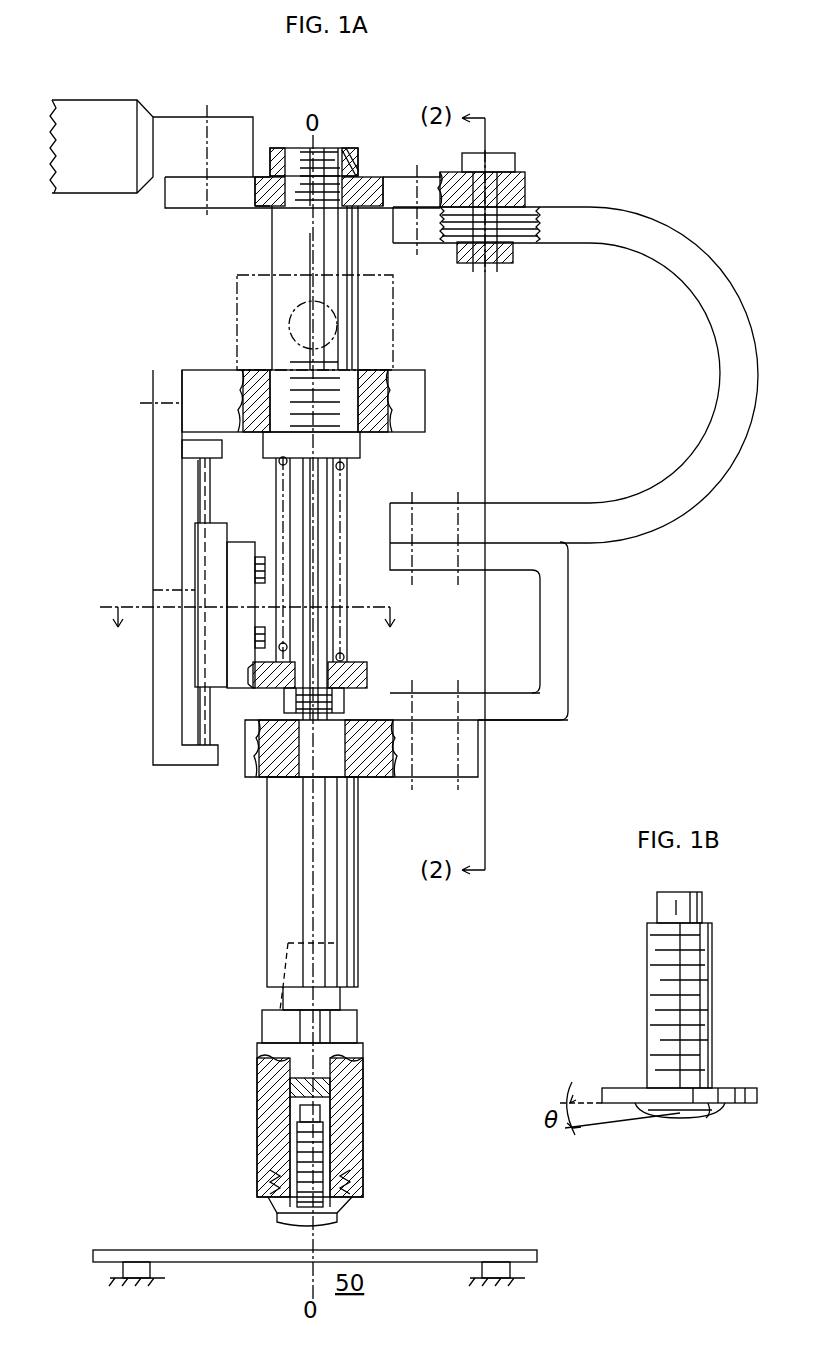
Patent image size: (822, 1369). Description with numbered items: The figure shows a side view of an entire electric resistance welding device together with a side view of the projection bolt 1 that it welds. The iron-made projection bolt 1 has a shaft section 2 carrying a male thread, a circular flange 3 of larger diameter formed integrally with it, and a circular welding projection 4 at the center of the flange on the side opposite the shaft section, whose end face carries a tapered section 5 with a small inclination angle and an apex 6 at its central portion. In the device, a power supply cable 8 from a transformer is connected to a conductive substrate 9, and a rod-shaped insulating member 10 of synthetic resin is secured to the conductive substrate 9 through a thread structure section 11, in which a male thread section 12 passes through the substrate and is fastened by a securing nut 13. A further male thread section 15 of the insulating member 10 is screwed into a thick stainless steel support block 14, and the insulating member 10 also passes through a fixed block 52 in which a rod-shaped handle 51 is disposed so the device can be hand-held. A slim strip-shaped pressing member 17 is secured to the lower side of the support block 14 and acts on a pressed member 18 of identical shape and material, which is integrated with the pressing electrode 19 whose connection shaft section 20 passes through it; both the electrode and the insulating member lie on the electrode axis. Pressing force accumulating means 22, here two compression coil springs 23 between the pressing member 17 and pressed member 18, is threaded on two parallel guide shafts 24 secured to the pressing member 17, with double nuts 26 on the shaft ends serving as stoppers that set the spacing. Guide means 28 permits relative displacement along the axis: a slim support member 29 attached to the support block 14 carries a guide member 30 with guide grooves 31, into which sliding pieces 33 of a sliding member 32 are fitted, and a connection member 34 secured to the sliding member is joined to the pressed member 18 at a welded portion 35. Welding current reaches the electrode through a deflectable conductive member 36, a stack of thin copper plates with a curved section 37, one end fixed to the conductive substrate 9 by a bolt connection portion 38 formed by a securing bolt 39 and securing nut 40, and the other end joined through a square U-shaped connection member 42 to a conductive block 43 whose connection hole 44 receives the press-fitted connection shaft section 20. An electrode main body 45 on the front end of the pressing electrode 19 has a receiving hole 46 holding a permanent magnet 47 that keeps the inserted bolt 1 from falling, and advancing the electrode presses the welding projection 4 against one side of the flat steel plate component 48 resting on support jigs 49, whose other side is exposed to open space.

In FIG. 1A, the projection bolt 1 is at (272, 1220).
In FIG. 1B, the projection bolt 1 is at (632, 913).
In FIG. 1A, the shaft section 2 is at (290, 1145).
In FIG. 1B, the shaft section 2 is at (650, 980).
In FIG. 1B, the circular flange 3 is at (617, 1090).
In FIG. 1B, the welding projection 4 is at (672, 1113).
In FIG. 1B, the tapered section 5 is at (706, 1115).
In FIG. 1B, the apex 6 is at (682, 1118).
In FIG. 1A, the power supply cable 8 is at (88, 195).
In FIG. 1A, the conductive substrate 9 is at (180, 210).
In FIG. 1A, the insulating member 10 is at (271, 250).
In FIG. 1A, the thread structure section 11 is at (276, 145).
In FIG. 1A, the male thread section 12 is at (328, 148).
In FIG. 1A, the securing nut 13 is at (352, 156).
In FIG. 1A, the support block 14 is at (412, 372).
In FIG. 1A, the male thread section 15 is at (280, 402).
In FIG. 1A, the pressing member 17 is at (360, 447).
In FIG. 1A, the pressed member 18 is at (367, 675).
In FIG. 1A, the pressing electrode 19 is at (258, 960).
In FIG. 1A, the connection shaft section 20 is at (345, 777).
In FIG. 1A, the pressing force accumulating means 22 is at (345, 583).
In FIG. 1A, the compression coil springs 23 is at (345, 468).
In FIG. 1A, the guide shafts 24 is at (322, 508).
In FIG. 1A, the double nuts 26 is at (345, 708).
In FIG. 1A, the guide means 28 is at (190, 660).
In FIG. 1A, the support member 29 is at (152, 423).
In FIG. 1A, the guide member 30 is at (199, 470).
In FIG. 1A, the guide grooves 31 is at (199, 500).
In FIG. 1A, the sliding member 32 is at (160, 590).
In FIG. 1A, the sliding pieces 33 is at (195, 550).
In FIG. 1A, the connection member 34 is at (243, 540).
In FIG. 1A, the welded portion 35 is at (253, 690).
In FIG. 1A, the conductive member 36 is at (605, 212).
In FIG. 1A, the curved section 37 is at (720, 366).
In FIG. 1A, the bolt connection portion 38 is at (205, 128).
In FIG. 1A, the securing bolt 39 is at (515, 165).
In FIG. 1A, the securing nut 40 is at (513, 260).
In FIG. 1A, the connection member 42 is at (568, 612).
In FIG. 1A, the conductive block 43 is at (470, 762).
In FIG. 1A, the connection hole 44 is at (290, 790).
In FIG. 1A, the electrode main body 45 is at (257, 1060).
In FIG. 1A, the receiving hole 46 is at (322, 1115).
In FIG. 1A, the permanent magnet 47 is at (322, 1090).
In FIG. 1A, the steel plate component 48 is at (175, 1250).
In FIG. 1A, the support jigs 49 is at (150, 1270).
In FIG. 1A, the handle 51 is at (290, 325).
In FIG. 1A, the fixed block 52 is at (237, 295).